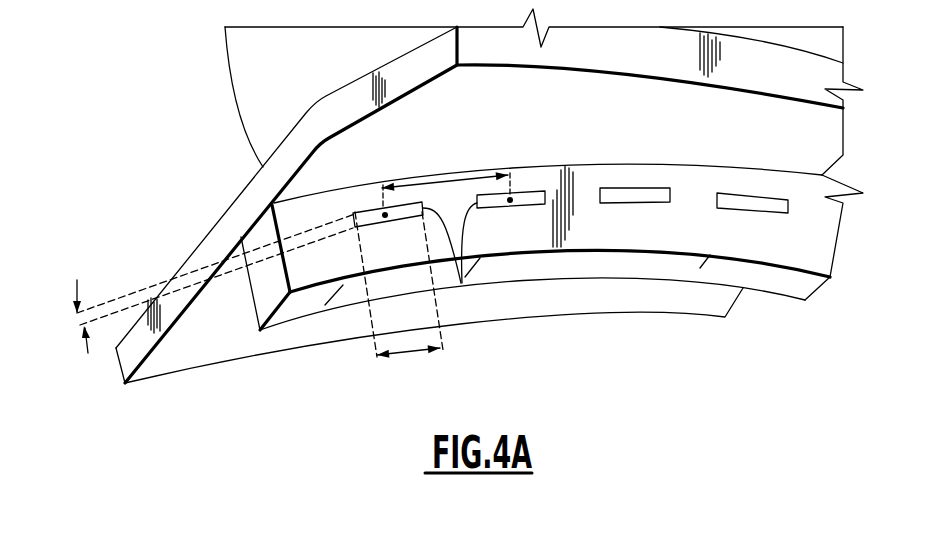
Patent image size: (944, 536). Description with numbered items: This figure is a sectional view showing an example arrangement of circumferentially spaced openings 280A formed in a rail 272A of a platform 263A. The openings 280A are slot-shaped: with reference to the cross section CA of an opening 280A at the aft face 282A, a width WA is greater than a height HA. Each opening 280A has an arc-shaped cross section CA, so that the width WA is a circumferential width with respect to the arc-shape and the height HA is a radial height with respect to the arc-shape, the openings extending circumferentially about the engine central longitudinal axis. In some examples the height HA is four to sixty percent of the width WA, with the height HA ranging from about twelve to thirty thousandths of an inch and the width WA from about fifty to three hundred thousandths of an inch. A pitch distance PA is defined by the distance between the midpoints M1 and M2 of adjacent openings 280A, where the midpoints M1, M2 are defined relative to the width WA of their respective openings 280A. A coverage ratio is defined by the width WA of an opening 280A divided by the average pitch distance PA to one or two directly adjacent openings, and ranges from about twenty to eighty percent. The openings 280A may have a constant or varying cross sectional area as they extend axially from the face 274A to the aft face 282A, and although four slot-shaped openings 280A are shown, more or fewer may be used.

The aft face 282A is at (298, 216).
The openings 280A is at (462, 283).
The rail 272A is at (268, 333).
The face 274A is at (258, 305).
The platform 263A is at (133, 353).
The cross section CA is at (363, 212).
The pitch distance PA is at (447, 181).
The midpoint M1 is at (390, 235).
The midpoint M2 is at (516, 220).
The height HA is at (88, 353).
The width WA is at (410, 352).